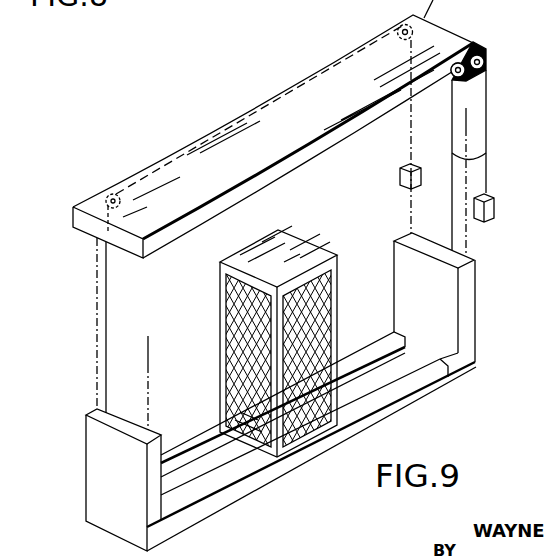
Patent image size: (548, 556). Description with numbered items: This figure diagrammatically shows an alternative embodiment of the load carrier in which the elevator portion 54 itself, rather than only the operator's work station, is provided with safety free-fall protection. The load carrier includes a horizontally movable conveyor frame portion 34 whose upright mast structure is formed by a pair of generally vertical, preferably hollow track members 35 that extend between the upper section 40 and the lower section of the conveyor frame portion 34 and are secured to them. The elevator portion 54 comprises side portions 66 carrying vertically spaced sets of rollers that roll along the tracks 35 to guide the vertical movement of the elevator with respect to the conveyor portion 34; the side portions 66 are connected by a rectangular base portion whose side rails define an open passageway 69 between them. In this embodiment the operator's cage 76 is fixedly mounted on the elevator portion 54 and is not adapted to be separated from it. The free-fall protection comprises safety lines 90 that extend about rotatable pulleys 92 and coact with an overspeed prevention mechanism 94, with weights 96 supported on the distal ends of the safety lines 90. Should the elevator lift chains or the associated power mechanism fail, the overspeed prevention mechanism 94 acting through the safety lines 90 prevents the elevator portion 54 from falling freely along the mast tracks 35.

The conveyor frame portion 34 is at (471, 35).
The track members 35 is at (95, 337).
The upper section 40 is at (330, 124).
The elevator portion 54 is at (438, 375).
The side portions 66 is at (250, 488).
The passageway 69 is at (271, 7).
The operator's cage 76 is at (290, 252).
The safety lines 90 is at (107, 307).
The rotatable pulleys 92 is at (110, 194).
The overspeed prevention mechanism 94 is at (488, 66).
The weights 96 is at (402, 186).